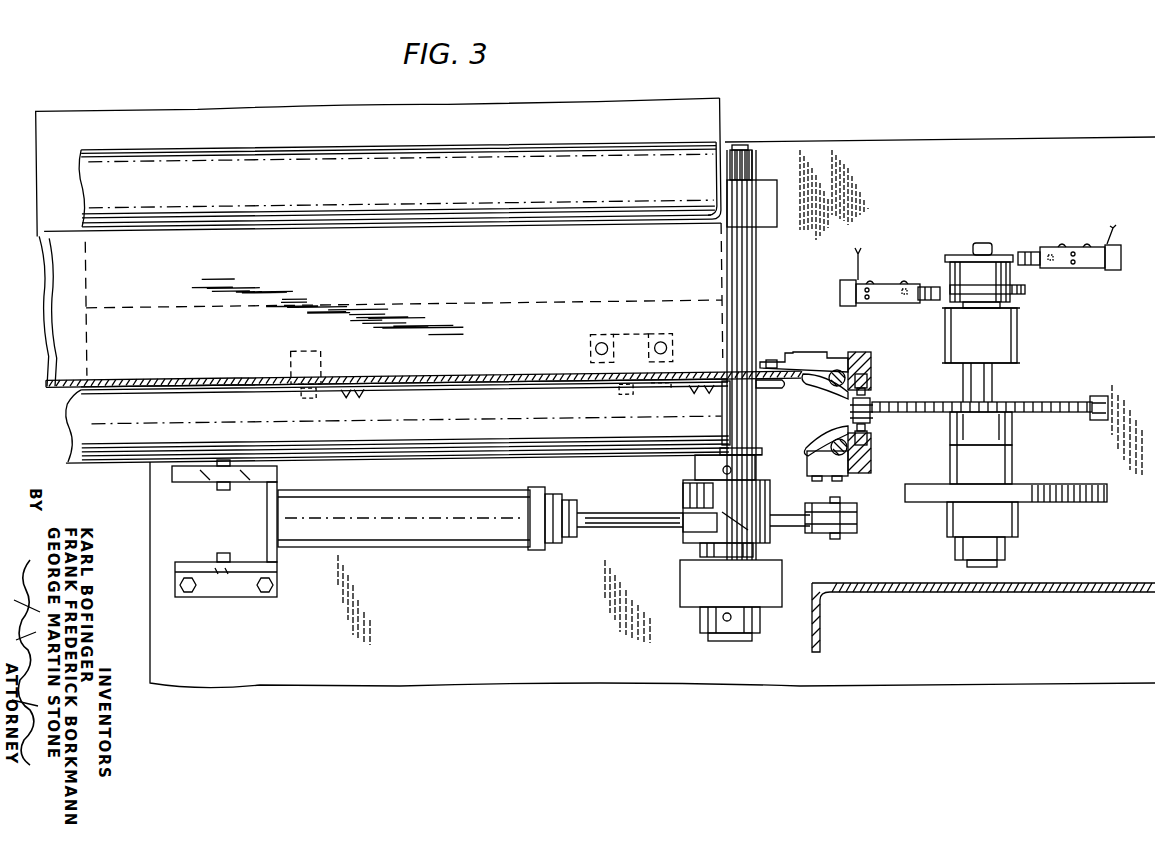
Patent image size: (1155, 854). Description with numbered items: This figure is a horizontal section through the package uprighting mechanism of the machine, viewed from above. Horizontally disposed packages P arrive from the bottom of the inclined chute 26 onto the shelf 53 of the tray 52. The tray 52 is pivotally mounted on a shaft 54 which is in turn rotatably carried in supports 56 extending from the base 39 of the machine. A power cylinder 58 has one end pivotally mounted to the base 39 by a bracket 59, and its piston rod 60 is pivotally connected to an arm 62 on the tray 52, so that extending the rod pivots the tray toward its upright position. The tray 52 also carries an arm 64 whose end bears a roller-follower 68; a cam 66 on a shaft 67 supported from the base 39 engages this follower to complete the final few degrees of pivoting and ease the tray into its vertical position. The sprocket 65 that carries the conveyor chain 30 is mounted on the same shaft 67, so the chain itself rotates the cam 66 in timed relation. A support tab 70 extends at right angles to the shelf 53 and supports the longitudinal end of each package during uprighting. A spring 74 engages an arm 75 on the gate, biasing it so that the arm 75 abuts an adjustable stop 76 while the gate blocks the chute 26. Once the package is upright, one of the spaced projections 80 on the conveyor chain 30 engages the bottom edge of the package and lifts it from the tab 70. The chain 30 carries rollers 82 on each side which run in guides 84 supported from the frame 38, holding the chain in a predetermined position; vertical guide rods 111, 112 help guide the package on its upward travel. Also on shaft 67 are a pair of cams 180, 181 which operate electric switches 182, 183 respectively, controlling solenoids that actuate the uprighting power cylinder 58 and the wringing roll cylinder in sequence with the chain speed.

The inclined chute 26 is at (205, 130).
The package P is at (283, 160).
The conveyor chain 30 is at (874, 405).
The frame 38 is at (956, 594).
The base 39 is at (328, 678).
The tray 52 is at (116, 466).
The shelf 53 is at (66, 440).
The shaft 54 is at (748, 306).
The supports 56 is at (773, 220).
The power cylinder 58 is at (418, 548).
The bracket 59 is at (232, 598).
The piston rod 60 is at (606, 529).
The arm 62 is at (797, 520).
The arm 64 is at (733, 520).
The sprocket 65 is at (1082, 405).
The cam 66 is at (1071, 486).
The shaft 67 is at (994, 380).
The roller-follower 68 is at (683, 496).
The support tab 70 is at (723, 410).
The spring 74 is at (492, 394).
The arm 75 is at (770, 390).
The adjustable stop 76 is at (680, 398).
The projections 80 is at (848, 428).
The rollers 82 is at (868, 384).
The guides 84 is at (868, 354).
The vertical guide rod 111 is at (836, 369).
The vertical guide rod 112 is at (845, 456).
The cam 180 is at (1026, 290).
The cam 181 is at (962, 260).
The electric switch 182 is at (878, 282).
The electric switch 183 is at (1088, 246).